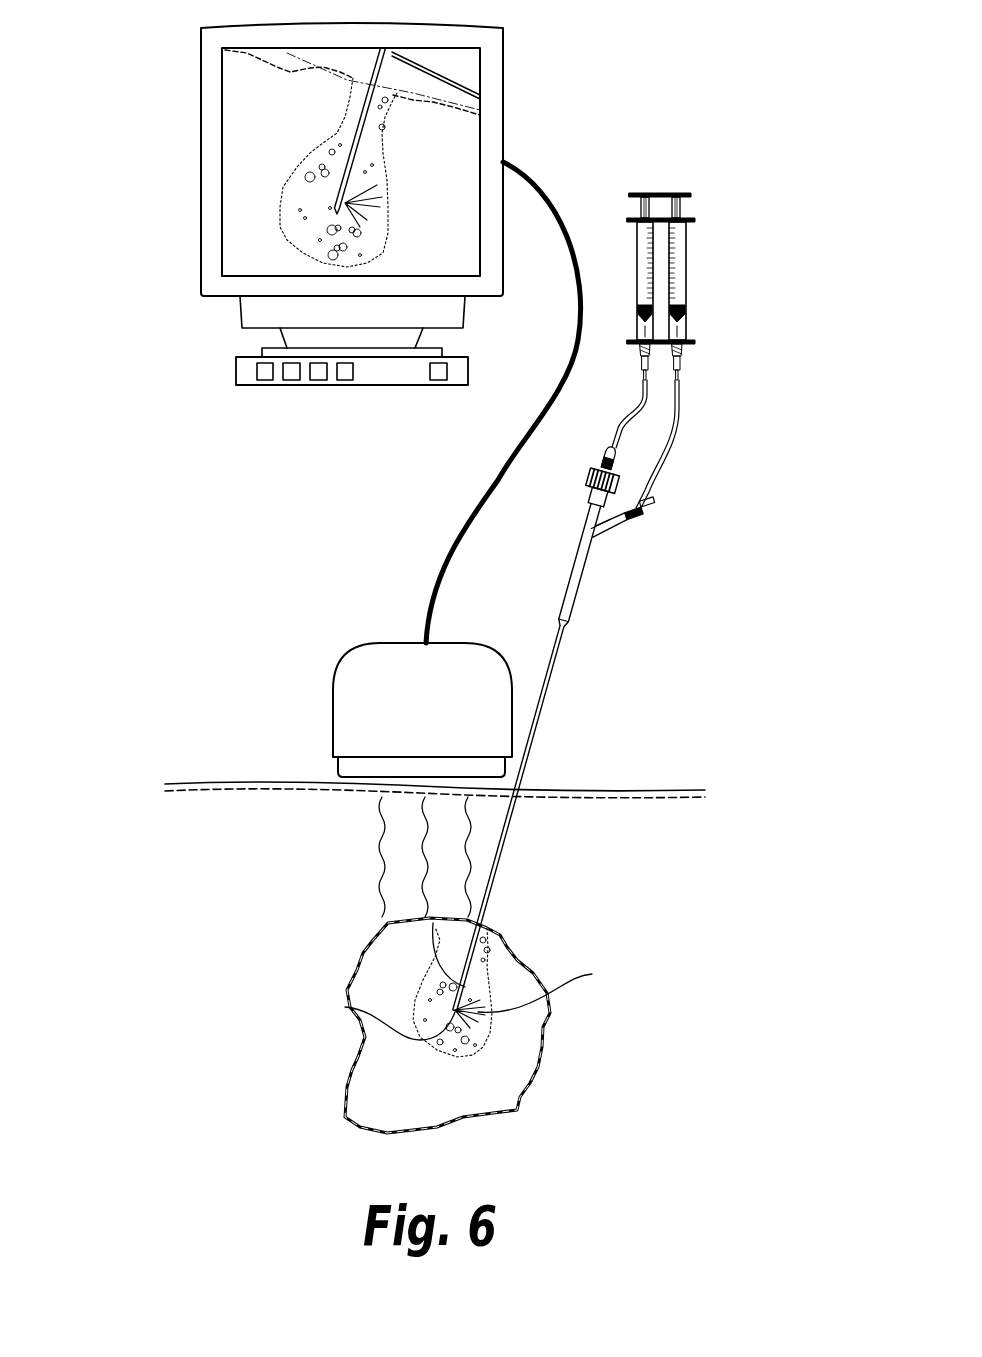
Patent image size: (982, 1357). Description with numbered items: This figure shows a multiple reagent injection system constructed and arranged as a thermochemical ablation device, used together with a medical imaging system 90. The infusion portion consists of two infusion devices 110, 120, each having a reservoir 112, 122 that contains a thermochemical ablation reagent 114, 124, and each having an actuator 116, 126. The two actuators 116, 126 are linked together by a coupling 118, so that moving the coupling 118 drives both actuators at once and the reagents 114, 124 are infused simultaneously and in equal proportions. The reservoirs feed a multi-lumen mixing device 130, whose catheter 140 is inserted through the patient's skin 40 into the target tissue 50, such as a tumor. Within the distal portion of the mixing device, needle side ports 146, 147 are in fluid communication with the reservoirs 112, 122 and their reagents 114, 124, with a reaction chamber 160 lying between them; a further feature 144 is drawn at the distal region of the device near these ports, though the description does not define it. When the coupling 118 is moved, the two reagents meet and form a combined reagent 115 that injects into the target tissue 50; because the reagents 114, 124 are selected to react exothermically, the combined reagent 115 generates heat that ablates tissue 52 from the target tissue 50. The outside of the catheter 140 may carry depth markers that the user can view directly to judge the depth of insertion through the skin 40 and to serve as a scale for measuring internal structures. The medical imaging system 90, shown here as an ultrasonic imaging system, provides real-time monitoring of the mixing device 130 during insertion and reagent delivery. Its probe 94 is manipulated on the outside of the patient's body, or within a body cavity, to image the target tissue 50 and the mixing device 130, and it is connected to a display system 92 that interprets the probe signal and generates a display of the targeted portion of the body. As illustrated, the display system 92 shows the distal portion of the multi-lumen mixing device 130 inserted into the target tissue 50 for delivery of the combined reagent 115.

The medical imaging system 90 is at (148, 20).
The display system 92 is at (504, 70).
The probe 94 is at (447, 643).
The skin 40 is at (673, 785).
The target tissue 50 is at (380, 1133).
The ablated tissue 52 is at (495, 928).
The infusion device 110 is at (590, 172).
The reservoir 112 is at (636, 250).
The reagent 114 is at (638, 330).
The combined reagent 115 is at (473, 1025).
The actuator 116 is at (640, 207).
The coupling 118 is at (659, 192).
The infusion device 120 is at (737, 246).
The reservoir 122 is at (688, 268).
The reagent 124 is at (690, 332).
The actuator 126 is at (687, 208).
The multi-lumen mixing device 130 is at (530, 566).
The catheter 140 is at (557, 677).
The first boundary of treatment zone 144 is at (345, 1007).
The needle side port 146 is at (433, 923).
The needle side port 147 is at (610, 974).
The reaction chamber 160 is at (507, 887).